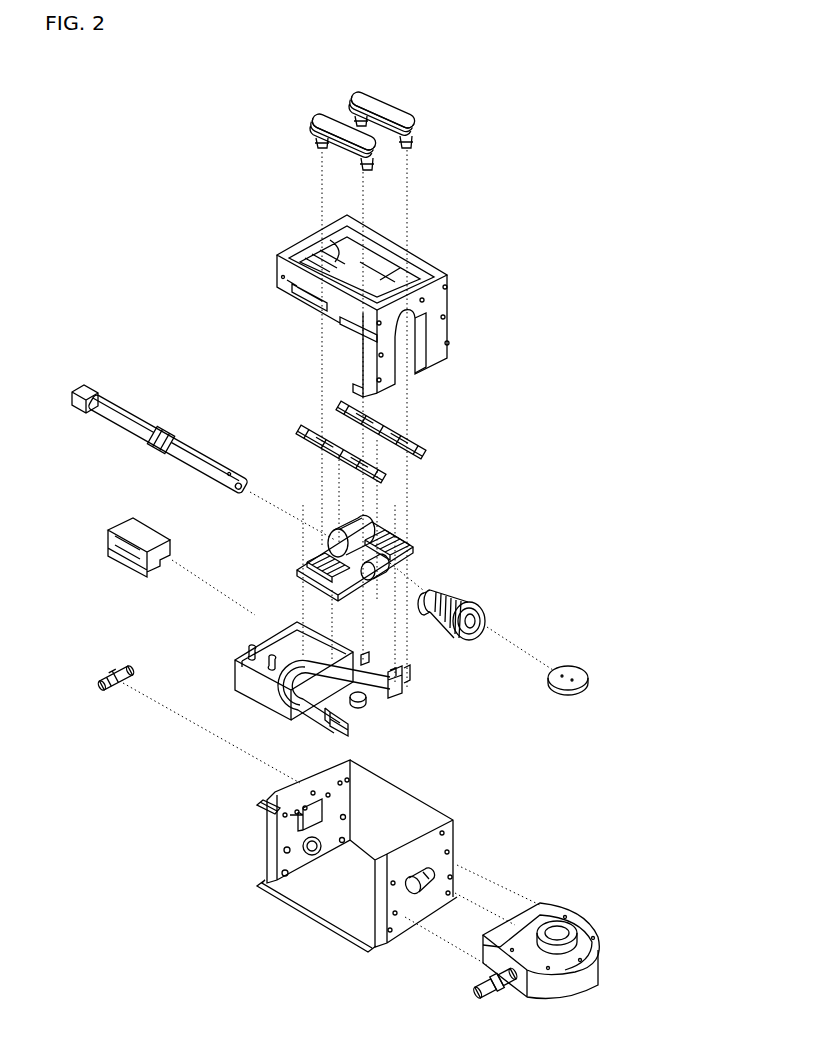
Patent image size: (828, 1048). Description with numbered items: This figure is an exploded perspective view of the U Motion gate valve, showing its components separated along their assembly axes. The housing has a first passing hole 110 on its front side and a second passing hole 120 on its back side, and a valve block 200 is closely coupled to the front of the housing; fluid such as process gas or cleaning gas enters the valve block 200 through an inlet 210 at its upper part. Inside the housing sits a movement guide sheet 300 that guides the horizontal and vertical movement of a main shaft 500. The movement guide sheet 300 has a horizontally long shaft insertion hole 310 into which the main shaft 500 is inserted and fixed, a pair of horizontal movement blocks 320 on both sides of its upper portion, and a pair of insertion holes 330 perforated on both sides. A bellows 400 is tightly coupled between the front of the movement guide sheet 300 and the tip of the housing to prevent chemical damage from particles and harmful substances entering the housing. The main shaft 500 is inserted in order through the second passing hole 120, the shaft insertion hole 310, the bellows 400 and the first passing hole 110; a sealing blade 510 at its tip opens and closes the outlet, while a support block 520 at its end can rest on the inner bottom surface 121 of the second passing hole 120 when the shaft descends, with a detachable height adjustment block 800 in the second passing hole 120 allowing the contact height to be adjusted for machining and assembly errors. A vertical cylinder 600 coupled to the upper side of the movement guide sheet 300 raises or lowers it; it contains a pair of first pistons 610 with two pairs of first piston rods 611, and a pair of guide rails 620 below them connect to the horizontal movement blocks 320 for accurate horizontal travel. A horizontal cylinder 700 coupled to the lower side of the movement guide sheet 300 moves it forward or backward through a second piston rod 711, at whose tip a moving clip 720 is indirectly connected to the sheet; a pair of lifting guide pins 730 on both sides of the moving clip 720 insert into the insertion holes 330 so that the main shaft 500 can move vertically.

The first passing hole 110 is at (318, 913).
The second passing hole 120 is at (400, 815).
The inner bottom surface 121 is at (300, 855).
The valve block 200 is at (597, 948).
The inlet 210 is at (565, 922).
The movement guide sheet 300 is at (403, 560).
The shaft insertion hole 310 is at (397, 571).
The horizontal movement blocks 320 is at (330, 535).
The insertion holes 330 is at (388, 530).
The bellows 400 is at (485, 608).
The main shaft 500 is at (138, 420).
The sealing blade 510 is at (575, 668).
The support block 520 is at (87, 388).
The vertical cylinder 600 is at (437, 303).
The first pistons 610 is at (308, 118).
The first piston rods 611 is at (313, 141).
The guide rails 620 is at (422, 446).
The horizontal cylinder 700 is at (230, 660).
The second piston rod 711 is at (358, 695).
The moving clip 720 is at (350, 680).
The lifting guide pins 730 is at (405, 678).
The height adjustment block 800 is at (105, 692).